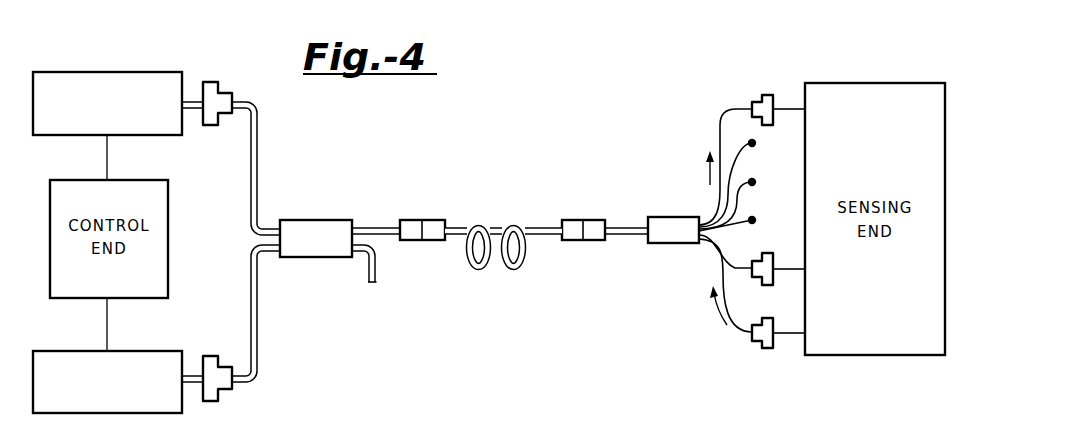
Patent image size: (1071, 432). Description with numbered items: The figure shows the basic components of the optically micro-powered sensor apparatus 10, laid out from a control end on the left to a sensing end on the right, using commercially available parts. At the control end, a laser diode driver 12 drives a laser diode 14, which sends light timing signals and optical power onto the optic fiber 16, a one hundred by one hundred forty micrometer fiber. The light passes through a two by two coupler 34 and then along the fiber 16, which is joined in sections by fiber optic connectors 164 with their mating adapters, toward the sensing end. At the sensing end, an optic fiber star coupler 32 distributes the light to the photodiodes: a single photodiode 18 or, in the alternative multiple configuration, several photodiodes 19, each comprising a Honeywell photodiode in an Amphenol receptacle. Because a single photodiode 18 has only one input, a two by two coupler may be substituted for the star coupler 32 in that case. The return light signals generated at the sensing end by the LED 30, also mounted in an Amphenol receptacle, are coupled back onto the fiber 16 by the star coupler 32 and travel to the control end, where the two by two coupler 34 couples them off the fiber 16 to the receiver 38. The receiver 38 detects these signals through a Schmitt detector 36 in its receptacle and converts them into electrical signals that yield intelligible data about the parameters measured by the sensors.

The optically micro-powered sensor apparatus 10 is at (438, 146).
The laser diode driver 12 is at (135, 72).
The laser diode 14 is at (212, 82).
The optic fiber 16 is at (450, 241).
The photodiode receptacle (single) 18 is at (765, 95).
The photodiode receptacles (multiple) 19 is at (801, 138).
The LED receptacle 30 is at (757, 348).
The optic fiber star coupler 32 is at (670, 217).
The 2 by 2 coupler 34 is at (305, 220).
The Schmitt detector receptacle 36 is at (208, 401).
The receiver 38 is at (135, 351).
The fiber optic connectors 164 is at (410, 220).